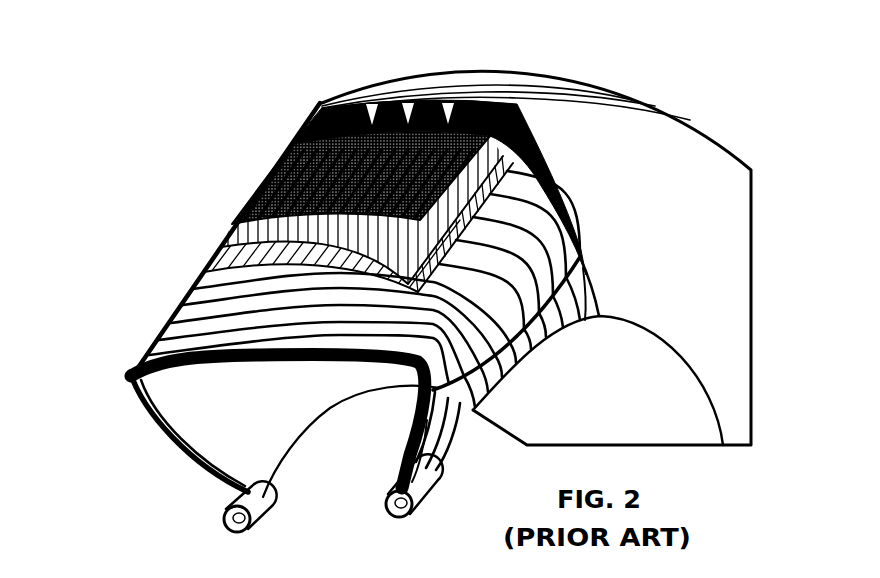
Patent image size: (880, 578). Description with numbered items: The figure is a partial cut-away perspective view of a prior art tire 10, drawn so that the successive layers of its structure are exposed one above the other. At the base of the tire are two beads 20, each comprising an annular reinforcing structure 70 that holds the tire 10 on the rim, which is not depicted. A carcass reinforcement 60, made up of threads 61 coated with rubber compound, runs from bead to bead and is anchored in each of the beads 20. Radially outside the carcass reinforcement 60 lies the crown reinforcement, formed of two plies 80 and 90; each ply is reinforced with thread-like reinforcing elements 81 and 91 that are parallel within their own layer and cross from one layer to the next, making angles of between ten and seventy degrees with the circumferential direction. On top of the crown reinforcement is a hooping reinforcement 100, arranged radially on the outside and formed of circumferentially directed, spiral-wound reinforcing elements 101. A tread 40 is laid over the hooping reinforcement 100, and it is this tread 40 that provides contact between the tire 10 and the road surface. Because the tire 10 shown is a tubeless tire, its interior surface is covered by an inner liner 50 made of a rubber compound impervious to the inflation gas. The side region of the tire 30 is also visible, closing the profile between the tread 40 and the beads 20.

The tire 10 is at (708, 70).
The bead 20 is at (376, 471).
The sidewall portion 30 is at (612, 243).
The tread 40 is at (363, 103).
The inner liner 50 is at (242, 408).
The carcass reinforcement 60 is at (77, 322).
The threads 61 is at (190, 305).
The annular reinforcing structure 70 is at (385, 500).
The ply 80 is at (120, 256).
The thread-like reinforcing elements 81 is at (222, 244).
The ply 90 is at (130, 182).
The thread-like reinforcing elements 91 is at (272, 208).
The hooping reinforcement 100 is at (172, 43).
The spiral-wound reinforcing elements 101 is at (322, 158).